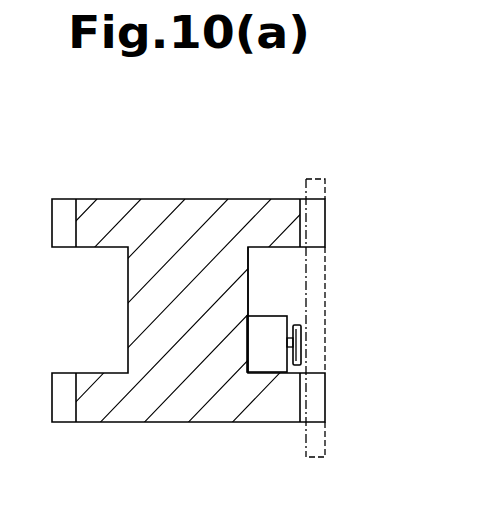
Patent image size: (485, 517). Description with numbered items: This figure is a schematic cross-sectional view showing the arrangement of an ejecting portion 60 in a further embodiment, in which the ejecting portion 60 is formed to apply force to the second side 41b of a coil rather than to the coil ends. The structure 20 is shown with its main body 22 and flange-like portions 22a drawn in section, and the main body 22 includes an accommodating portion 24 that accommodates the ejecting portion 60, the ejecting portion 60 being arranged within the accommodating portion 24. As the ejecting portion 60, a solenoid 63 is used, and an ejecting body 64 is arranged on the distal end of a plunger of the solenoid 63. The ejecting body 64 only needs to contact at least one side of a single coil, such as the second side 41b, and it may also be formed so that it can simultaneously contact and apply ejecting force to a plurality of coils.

The lens barrel / moving body 20 is at (223, 292).
The main body 22 is at (155, 208).
The flange portions 22a is at (65, 212).
The accommodating portion 24 is at (263, 247).
The second side 41b is at (325, 275).
The ejecting portion 60 is at (333, 319).
The solenoid 63 is at (268, 325).
The ejecting body 64 is at (305, 335).